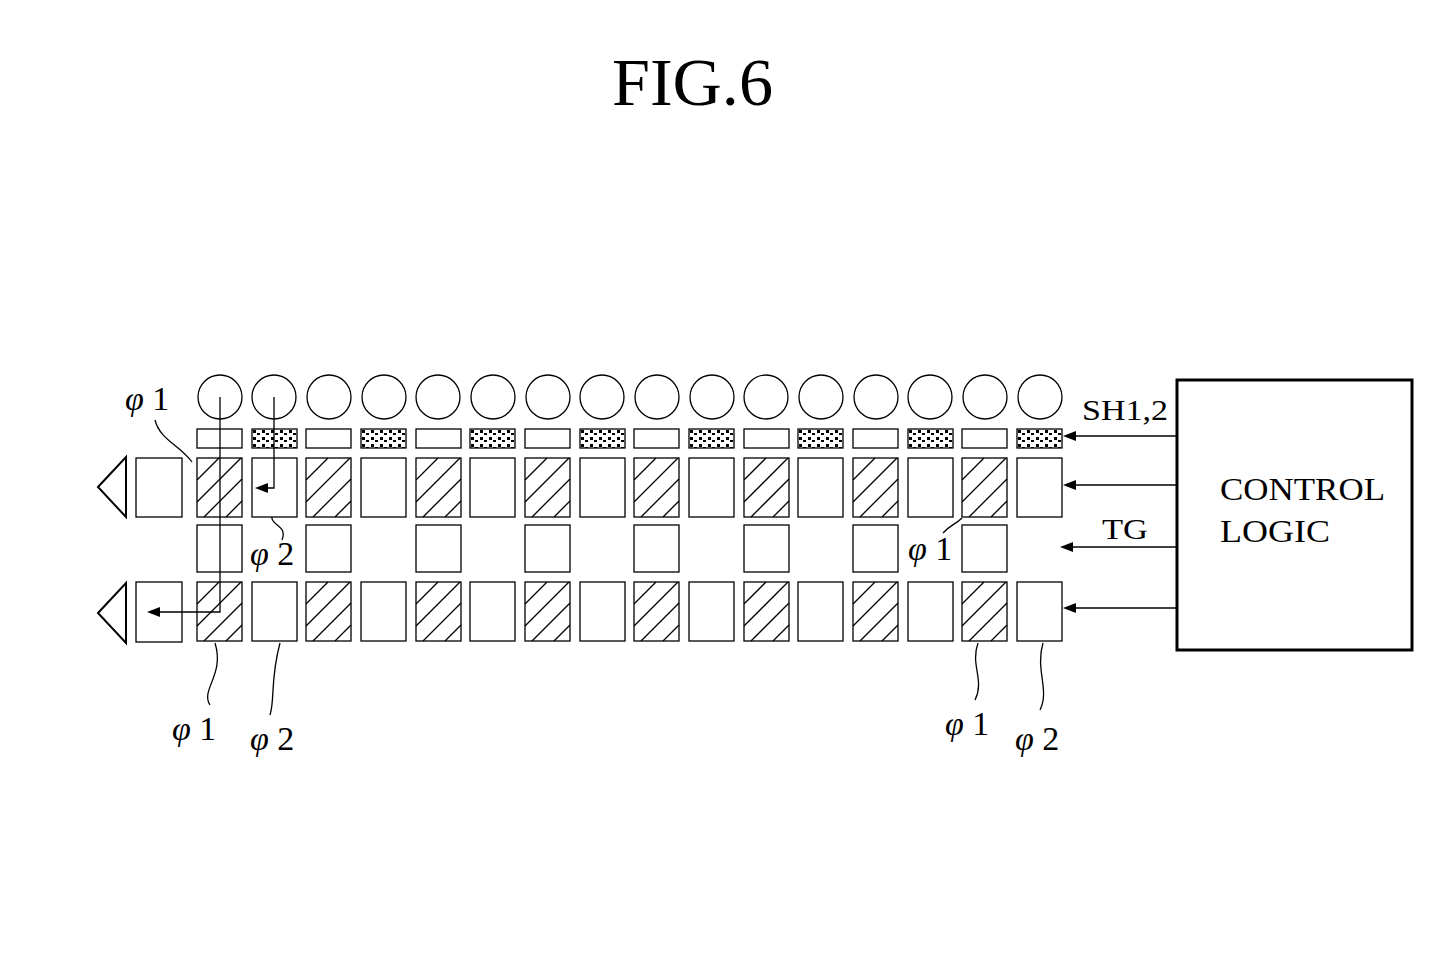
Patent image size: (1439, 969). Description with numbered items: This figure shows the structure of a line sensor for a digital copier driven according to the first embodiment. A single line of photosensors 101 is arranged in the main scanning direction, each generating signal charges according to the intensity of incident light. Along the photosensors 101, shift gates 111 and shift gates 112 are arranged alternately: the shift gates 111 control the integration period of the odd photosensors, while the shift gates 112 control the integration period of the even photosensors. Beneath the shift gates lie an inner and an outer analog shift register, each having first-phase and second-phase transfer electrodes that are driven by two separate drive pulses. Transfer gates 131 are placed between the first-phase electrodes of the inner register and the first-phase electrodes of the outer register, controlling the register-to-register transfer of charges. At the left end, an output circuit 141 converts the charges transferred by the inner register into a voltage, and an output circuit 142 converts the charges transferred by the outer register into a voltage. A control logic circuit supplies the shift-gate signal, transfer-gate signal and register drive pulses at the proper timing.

The photosensors 101 is at (210, 377).
The shift gates 111 is at (460, 443).
The shift gates 112 is at (294, 429).
The transfer gates 131 is at (197, 548).
The output circuit 141 is at (117, 465).
The output circuit 142 is at (110, 630).